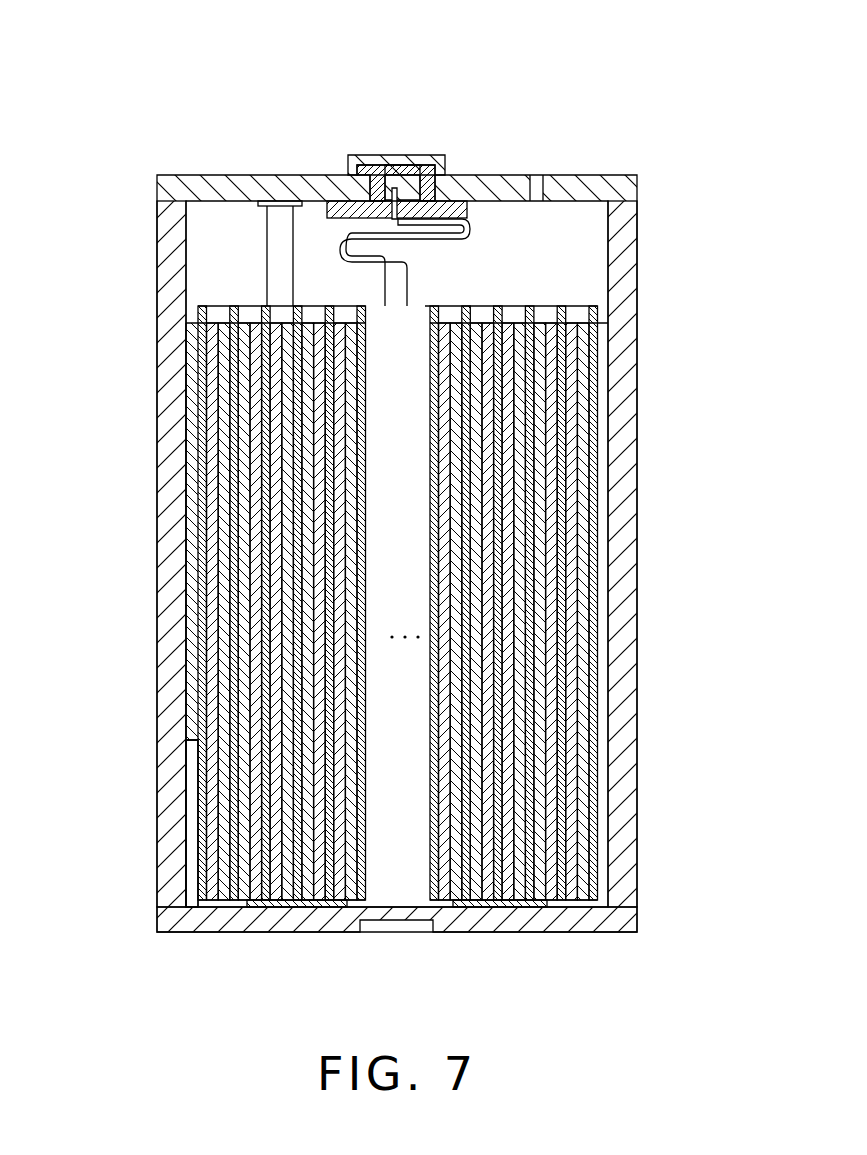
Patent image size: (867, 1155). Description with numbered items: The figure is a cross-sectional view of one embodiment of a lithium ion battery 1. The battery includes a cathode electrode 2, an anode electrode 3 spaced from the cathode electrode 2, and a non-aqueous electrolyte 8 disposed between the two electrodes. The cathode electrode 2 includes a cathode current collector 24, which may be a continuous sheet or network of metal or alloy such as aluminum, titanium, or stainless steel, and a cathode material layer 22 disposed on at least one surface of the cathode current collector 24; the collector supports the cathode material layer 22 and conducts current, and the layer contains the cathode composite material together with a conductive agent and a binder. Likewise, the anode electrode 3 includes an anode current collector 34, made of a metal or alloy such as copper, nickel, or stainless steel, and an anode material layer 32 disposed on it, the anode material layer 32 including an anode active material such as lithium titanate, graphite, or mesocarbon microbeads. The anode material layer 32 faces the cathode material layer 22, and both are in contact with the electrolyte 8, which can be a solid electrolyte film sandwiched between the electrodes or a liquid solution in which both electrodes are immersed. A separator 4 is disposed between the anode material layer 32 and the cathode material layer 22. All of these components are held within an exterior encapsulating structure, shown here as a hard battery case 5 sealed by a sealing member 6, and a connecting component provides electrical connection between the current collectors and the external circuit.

The lithium ion battery 1 is at (412, 30).
The cathode electrode 2 is at (725, 575).
The cathode material layer 22 is at (590, 597).
The cathode current collector 24 is at (590, 666).
The anode electrode 3 is at (100, 575).
The anode material layer 32 is at (238, 597).
The anode current collector 34 is at (232, 666).
The separator 4 is at (198, 792).
The non-aqueous electrolyte 8 is at (128, 823).
The battery case 5 is at (178, 277).
The sealing member 6 is at (350, 155).